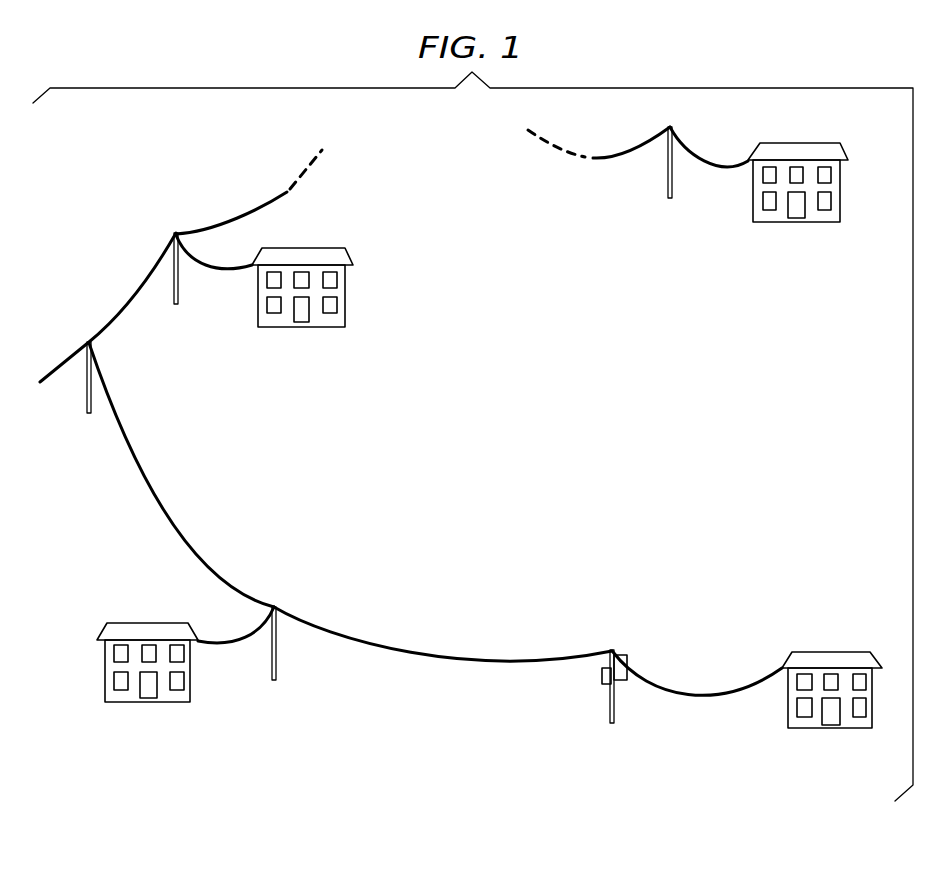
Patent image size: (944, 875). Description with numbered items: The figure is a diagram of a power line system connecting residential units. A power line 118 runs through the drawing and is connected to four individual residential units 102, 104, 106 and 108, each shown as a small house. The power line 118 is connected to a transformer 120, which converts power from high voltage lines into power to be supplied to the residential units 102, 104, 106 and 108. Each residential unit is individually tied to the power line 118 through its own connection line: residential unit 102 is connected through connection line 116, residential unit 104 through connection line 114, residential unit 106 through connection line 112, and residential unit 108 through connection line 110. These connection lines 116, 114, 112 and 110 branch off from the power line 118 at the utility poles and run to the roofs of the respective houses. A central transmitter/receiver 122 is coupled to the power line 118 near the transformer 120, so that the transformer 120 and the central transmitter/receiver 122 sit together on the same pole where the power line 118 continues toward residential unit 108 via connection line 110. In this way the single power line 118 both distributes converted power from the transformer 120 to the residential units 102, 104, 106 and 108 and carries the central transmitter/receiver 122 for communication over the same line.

The residential unit 102 is at (810, 143).
The residential unit 104 is at (345, 305).
The residential unit 106 is at (140, 703).
The residential unit 108 is at (818, 652).
The connection line 110 is at (712, 697).
The connection line 112 is at (223, 648).
The connection line 114 is at (205, 268).
The connection line 116 is at (706, 161).
The power line 118 is at (620, 153).
The transformer 120 is at (627, 660).
The central transmitter/receiver 122 is at (602, 676).